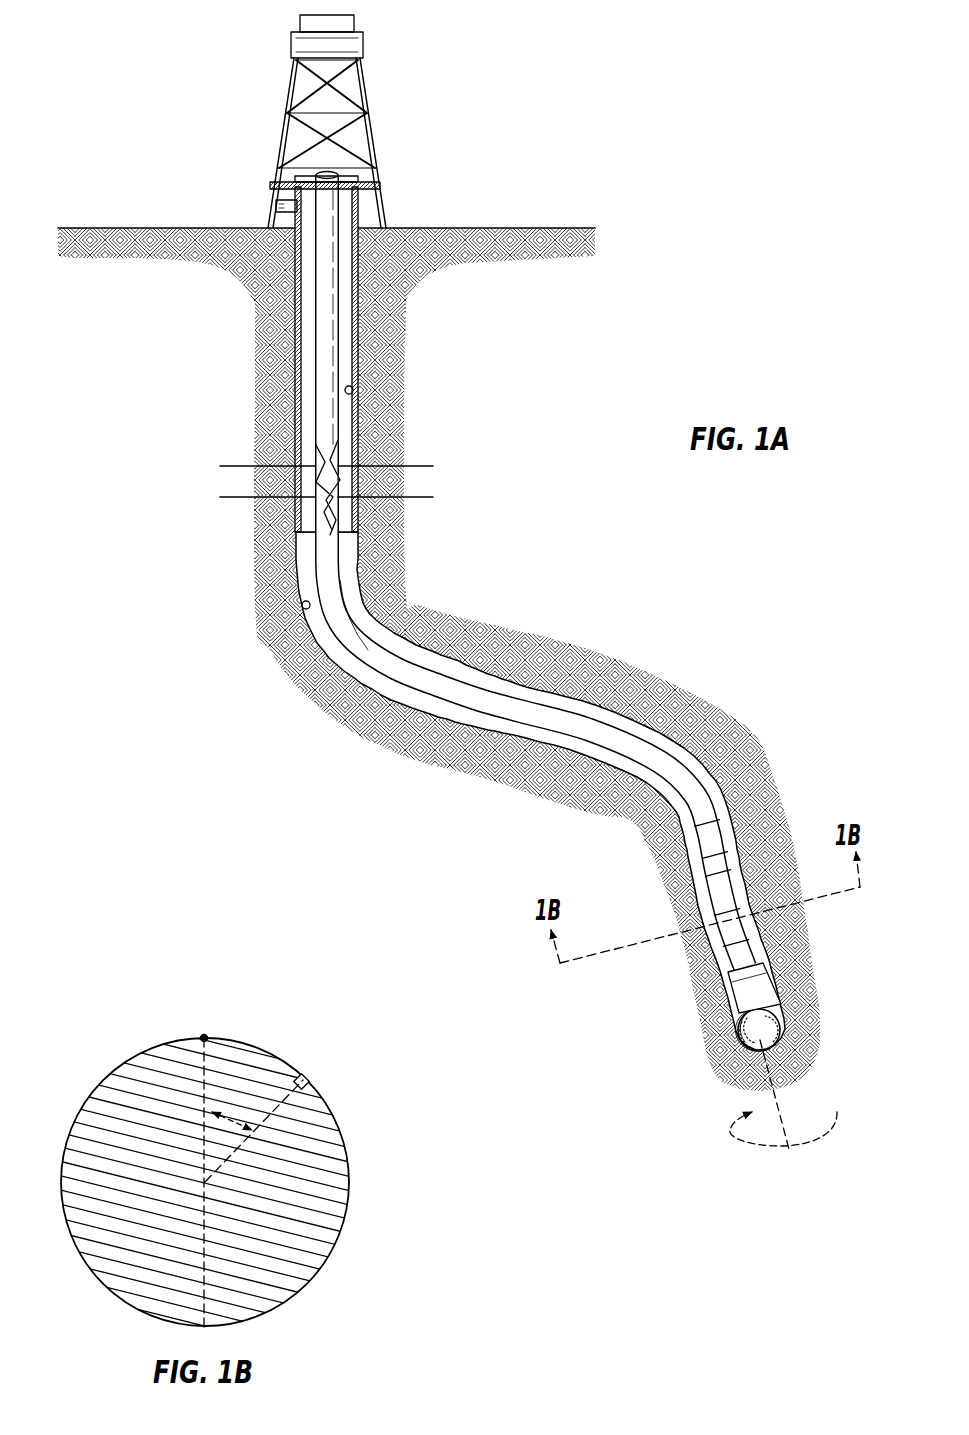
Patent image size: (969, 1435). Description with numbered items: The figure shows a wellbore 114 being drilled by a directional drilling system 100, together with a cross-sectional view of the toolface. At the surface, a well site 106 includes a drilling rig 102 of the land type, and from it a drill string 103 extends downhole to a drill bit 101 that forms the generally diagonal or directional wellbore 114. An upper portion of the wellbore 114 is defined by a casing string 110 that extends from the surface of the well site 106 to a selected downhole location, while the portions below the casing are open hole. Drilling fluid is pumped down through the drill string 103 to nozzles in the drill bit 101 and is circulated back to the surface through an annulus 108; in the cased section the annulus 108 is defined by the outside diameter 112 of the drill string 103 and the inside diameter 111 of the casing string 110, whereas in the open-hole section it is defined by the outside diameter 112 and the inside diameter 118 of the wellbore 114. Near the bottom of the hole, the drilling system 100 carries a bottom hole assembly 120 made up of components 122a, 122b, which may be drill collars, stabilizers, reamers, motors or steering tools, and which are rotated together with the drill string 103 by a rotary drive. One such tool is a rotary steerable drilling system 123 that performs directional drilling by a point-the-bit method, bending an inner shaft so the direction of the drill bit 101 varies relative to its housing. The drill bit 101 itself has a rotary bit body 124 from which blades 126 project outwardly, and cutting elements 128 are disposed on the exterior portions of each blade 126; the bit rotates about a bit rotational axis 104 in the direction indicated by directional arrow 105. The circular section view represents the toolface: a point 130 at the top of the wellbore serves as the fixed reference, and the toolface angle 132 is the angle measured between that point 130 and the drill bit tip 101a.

In FIG. 1A, the drilling system 100 is at (748, 58).
In FIG. 1A, the drill bit 101 is at (792, 944).
In FIG. 1B, the drill bit tip 101a is at (304, 1078).
In FIG. 1A, the drilling rig 102 is at (262, 88).
In FIG. 1A, the drill string 103 is at (343, 350).
In FIG. 1A, the bit rotational axis 104 is at (782, 1116).
In FIG. 1A, the directional arrow 105 is at (806, 1137).
In FIG. 1A, the well site 106 is at (367, 211).
In FIG. 1A, the annulus 108 is at (300, 330).
In FIG. 1A, the casing string 110 is at (294, 372).
In FIG. 1A, the inside diameter of the casing string 111 is at (353, 391).
In FIG. 1A, the outside diameter of the drill string 112 is at (335, 640).
In FIG. 1A, the wellbore 114 is at (577, 612).
In FIG. 1A, the inside diameter of the wellbore 118 is at (303, 606).
In FIG. 1A, the bottom hole assembly 120 is at (766, 829).
In FIG. 1A, the component 122a is at (699, 852).
In FIG. 1A, the component 122b is at (707, 897).
In FIG. 1A, the rotary steerable drilling system 123 is at (725, 945).
In FIG. 1A, the rotary bit body 124 is at (737, 996).
In FIG. 1A, the blades 126 is at (758, 1036).
In FIG. 1A, the cutting elements 128 is at (782, 1030).
In FIG. 1B, the point 130 is at (203, 1037).
In FIG. 1B, the toolface angle 132 is at (235, 1108).